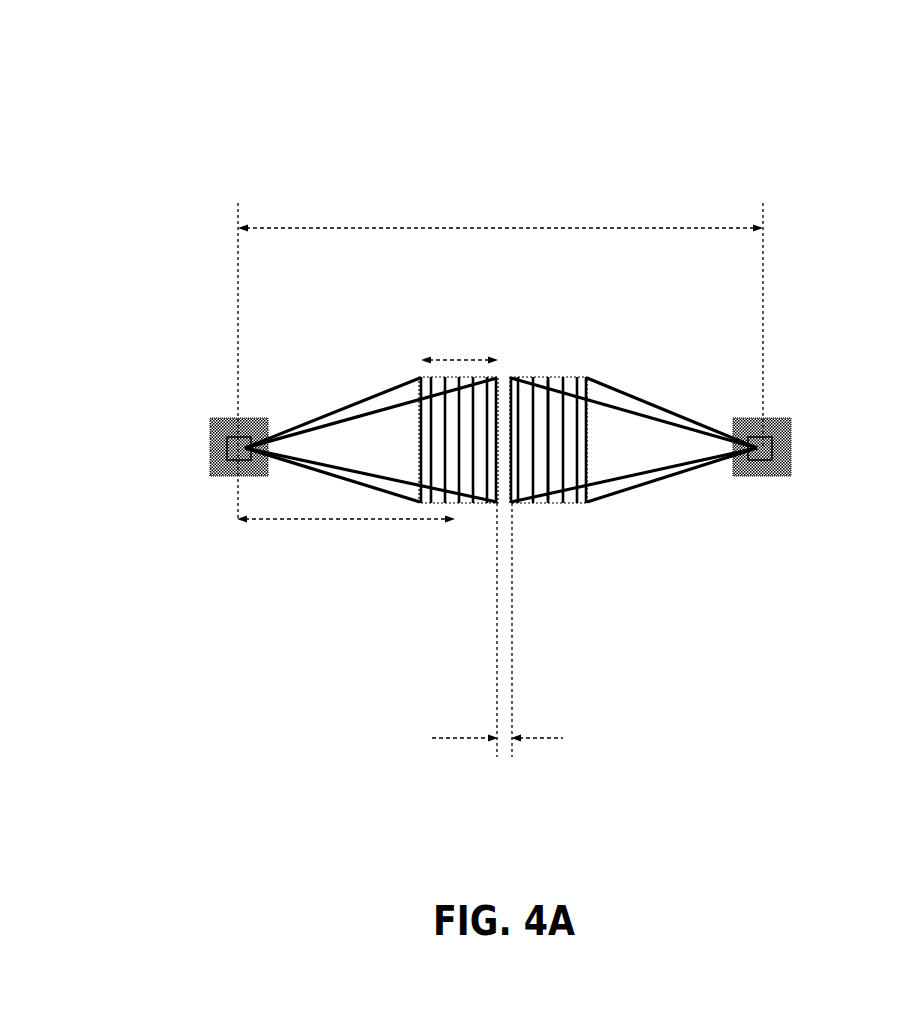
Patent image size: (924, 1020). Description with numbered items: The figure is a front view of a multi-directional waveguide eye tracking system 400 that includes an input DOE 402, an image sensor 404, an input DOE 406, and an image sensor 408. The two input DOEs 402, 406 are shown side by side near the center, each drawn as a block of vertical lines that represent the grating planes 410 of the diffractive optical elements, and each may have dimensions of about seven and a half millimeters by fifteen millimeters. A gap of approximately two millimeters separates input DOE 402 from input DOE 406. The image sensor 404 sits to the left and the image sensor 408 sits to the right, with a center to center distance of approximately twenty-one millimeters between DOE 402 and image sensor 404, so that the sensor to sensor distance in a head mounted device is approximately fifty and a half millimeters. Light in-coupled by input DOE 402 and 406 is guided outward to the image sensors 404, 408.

The multi-directional waveguide eye tracking system 400 is at (523, 41).
The input DOE 402 is at (420, 376).
The image sensor 404 is at (212, 425).
The input DOE 406 is at (580, 377).
The image sensor 408 is at (792, 432).
The grating planes 410 is at (543, 467).